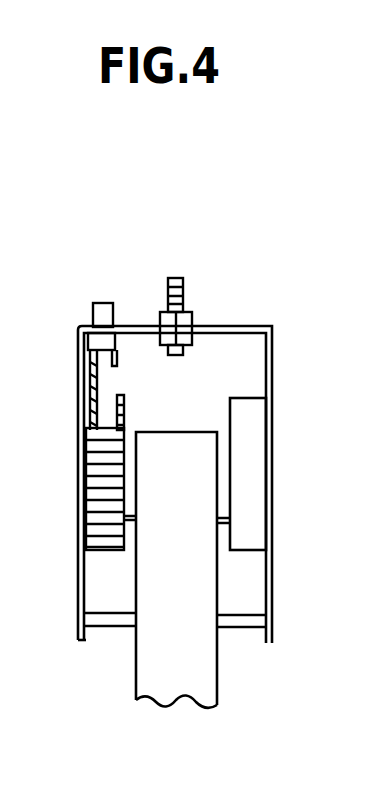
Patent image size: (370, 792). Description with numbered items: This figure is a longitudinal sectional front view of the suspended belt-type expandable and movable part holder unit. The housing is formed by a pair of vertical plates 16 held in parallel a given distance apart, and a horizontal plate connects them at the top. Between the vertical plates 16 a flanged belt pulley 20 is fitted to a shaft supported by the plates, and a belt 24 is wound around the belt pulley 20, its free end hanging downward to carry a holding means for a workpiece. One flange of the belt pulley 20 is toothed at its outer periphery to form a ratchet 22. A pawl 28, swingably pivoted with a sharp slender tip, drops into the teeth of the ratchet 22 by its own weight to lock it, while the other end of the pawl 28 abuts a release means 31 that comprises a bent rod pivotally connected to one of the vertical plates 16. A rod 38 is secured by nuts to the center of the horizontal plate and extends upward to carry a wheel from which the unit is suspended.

The vertical plates 16 is at (78, 577).
The belt pulley 20 is at (224, 438).
The ratchet 22 is at (93, 484).
The belt 24 is at (203, 677).
The pawl 28 is at (95, 386).
The release means 31 is at (92, 310).
The rod 38 is at (186, 292).